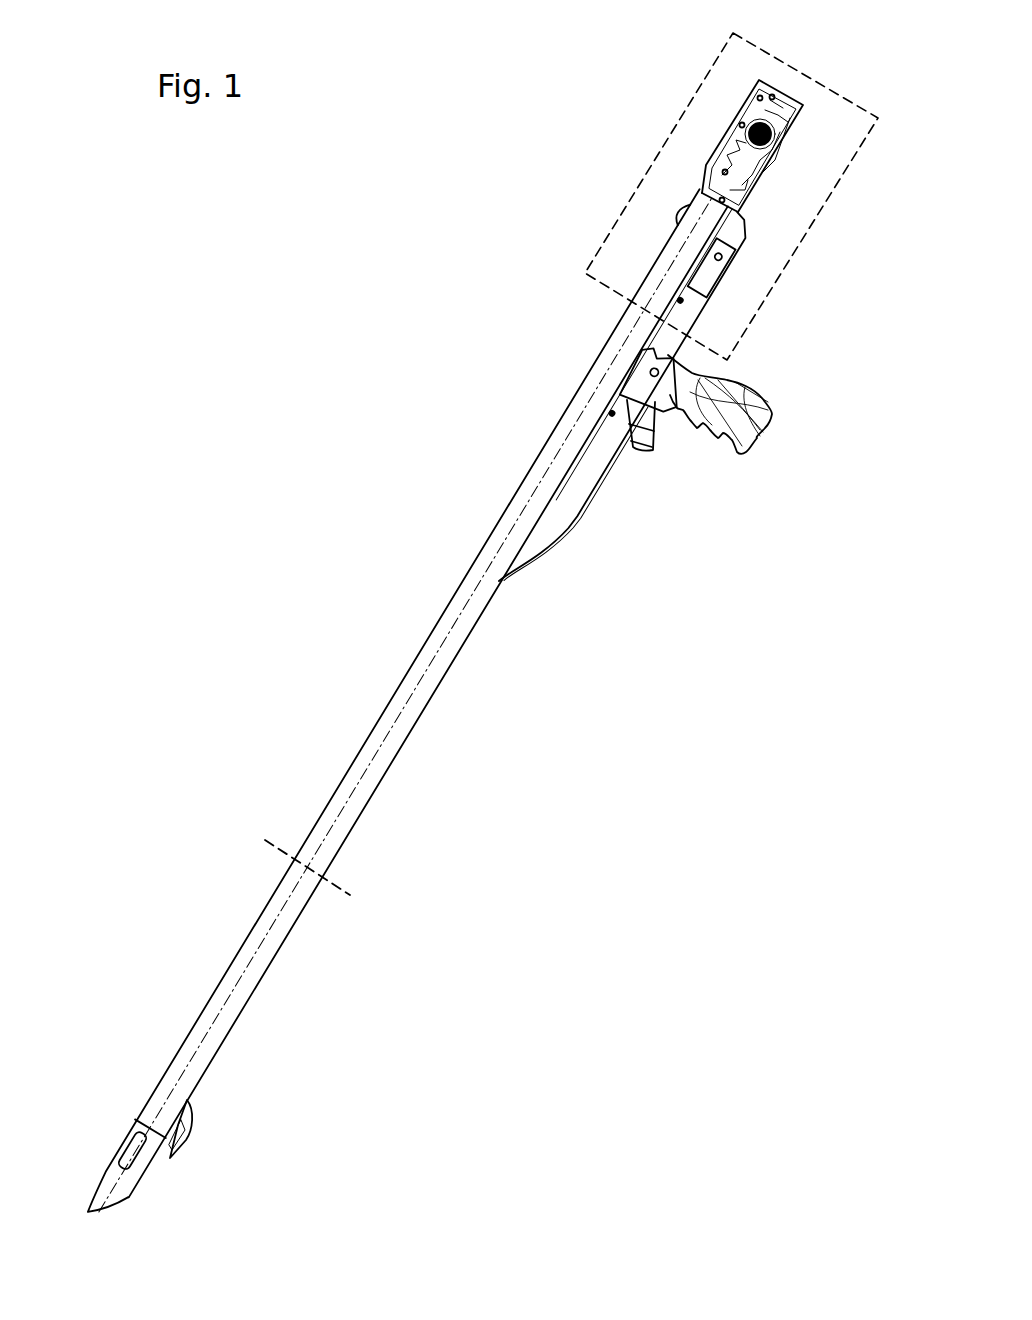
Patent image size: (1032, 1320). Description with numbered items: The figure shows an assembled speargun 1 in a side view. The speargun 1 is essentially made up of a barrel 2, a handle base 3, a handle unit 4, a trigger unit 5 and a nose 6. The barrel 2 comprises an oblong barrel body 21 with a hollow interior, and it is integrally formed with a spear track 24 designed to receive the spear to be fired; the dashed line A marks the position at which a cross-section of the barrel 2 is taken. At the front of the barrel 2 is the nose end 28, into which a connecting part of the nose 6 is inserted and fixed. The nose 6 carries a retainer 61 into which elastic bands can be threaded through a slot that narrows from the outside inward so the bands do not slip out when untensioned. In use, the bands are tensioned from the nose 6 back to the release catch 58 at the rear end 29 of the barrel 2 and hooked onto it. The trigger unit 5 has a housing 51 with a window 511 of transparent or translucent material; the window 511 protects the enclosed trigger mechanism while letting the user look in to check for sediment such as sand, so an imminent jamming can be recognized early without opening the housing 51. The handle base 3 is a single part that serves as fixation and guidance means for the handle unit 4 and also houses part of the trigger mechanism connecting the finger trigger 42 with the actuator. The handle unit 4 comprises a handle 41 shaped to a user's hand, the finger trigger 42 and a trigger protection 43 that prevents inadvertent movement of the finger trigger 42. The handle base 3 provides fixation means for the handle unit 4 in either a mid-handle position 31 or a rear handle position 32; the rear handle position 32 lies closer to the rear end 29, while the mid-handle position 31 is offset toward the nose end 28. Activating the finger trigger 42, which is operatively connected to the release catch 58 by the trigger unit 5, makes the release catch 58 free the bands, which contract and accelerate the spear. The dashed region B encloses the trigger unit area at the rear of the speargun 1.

The speargun 1 is at (340, 412).
The barrel 2 is at (413, 672).
The barrel body 21 is at (390, 747).
The spear track 24 is at (350, 763).
The nose end 28 is at (205, 1122).
The rear end 29 is at (670, 195).
The handle base 3 is at (563, 505).
The mid-handle position 31 is at (692, 358).
The rear handle position 32 is at (742, 268).
The handle unit 4 is at (718, 463).
The handle 41 is at (748, 415).
The finger trigger 42 is at (642, 428).
The trigger protection 43 is at (648, 433).
The trigger unit 5 is at (685, 155).
The housing 51 is at (727, 132).
The window 511 is at (757, 105).
The release catch 58 is at (673, 220).
The nose 6 is at (117, 1157).
The retainer 61 is at (132, 1160).
The dashed line A is at (346, 896).
The detail region B is at (596, 278).